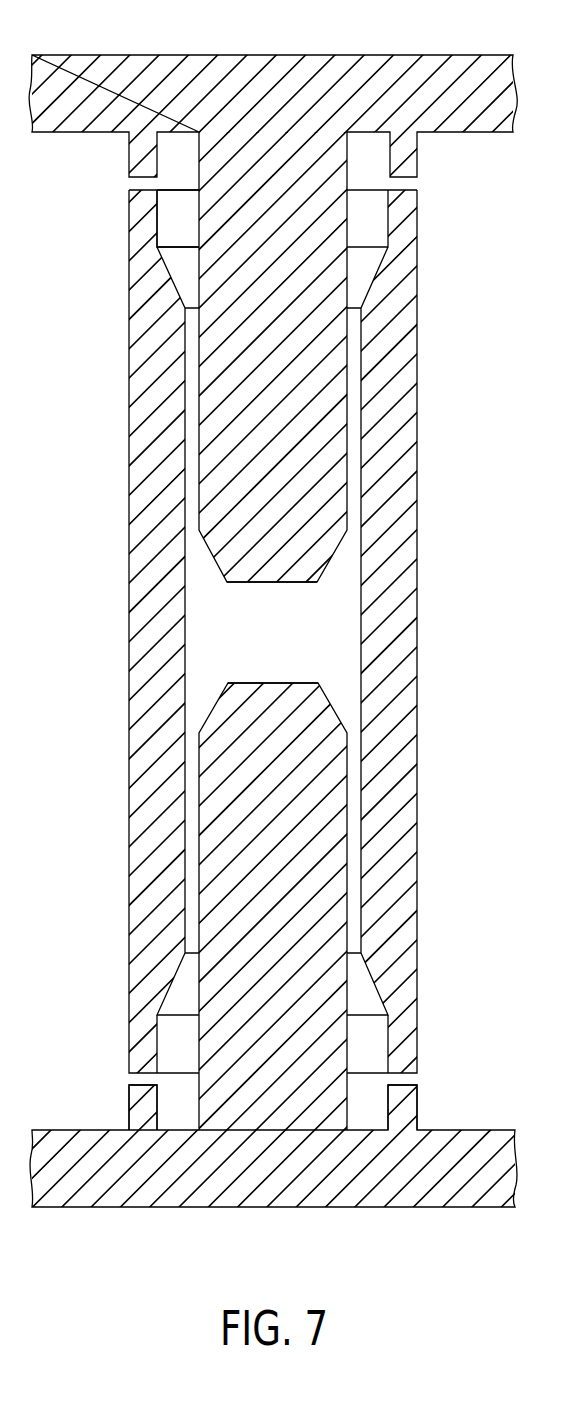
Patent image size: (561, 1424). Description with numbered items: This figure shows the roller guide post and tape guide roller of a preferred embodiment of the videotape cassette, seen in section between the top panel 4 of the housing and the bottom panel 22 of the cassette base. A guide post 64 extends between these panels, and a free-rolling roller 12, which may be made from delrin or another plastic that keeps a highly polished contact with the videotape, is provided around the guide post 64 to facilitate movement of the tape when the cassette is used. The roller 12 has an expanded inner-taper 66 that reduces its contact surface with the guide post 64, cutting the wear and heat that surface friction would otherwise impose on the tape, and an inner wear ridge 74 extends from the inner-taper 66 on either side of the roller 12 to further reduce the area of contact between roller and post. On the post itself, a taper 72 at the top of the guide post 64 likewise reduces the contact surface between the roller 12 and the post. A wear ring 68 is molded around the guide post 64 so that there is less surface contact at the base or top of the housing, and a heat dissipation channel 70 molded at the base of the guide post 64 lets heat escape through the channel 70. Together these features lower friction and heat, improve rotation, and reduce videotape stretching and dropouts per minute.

The top panel 4 is at (290, 58).
The roller 12 is at (147, 445).
The bottom panel 22 is at (267, 1194).
The guide post 64 is at (307, 893).
The inner-taper 66 is at (167, 226).
The wear ring 68 is at (140, 1103).
The heat dissipation channel 70 is at (380, 1110).
The taper 72 is at (330, 608).
The inner wear ridge 74 is at (390, 447).